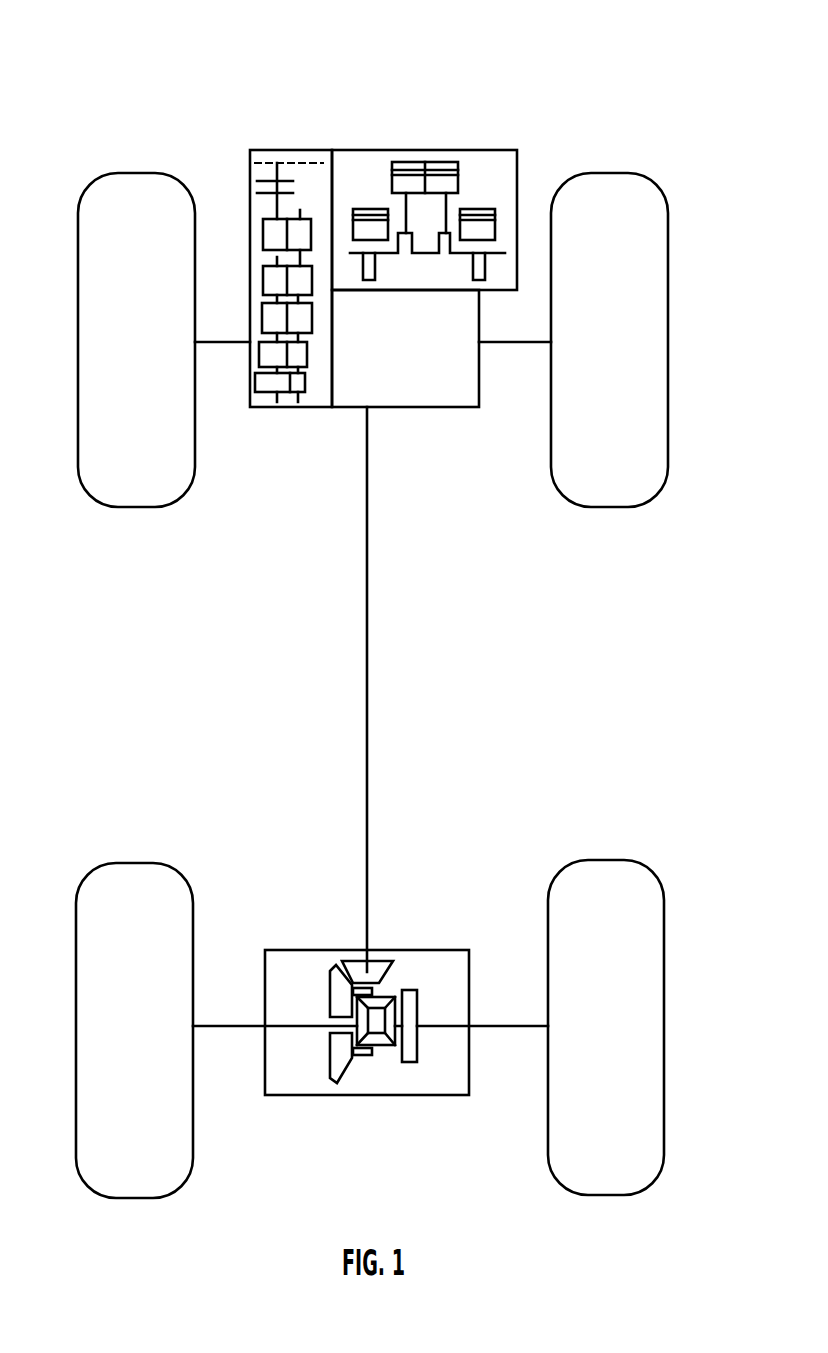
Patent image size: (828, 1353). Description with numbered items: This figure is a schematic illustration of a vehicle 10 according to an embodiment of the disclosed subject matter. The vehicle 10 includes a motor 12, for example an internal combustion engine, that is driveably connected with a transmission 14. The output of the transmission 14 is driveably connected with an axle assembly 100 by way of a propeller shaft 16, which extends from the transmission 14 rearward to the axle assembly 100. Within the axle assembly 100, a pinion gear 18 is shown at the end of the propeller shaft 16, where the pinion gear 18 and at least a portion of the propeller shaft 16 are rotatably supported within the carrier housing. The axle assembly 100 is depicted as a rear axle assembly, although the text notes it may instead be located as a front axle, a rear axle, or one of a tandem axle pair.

The vehicle 10 is at (593, 106).
The motor 12 is at (488, 177).
The transmission 14 is at (301, 163).
The propeller shaft 16 is at (367, 818).
The pinion gear 18 is at (360, 972).
The axle assembly 100 is at (447, 965).